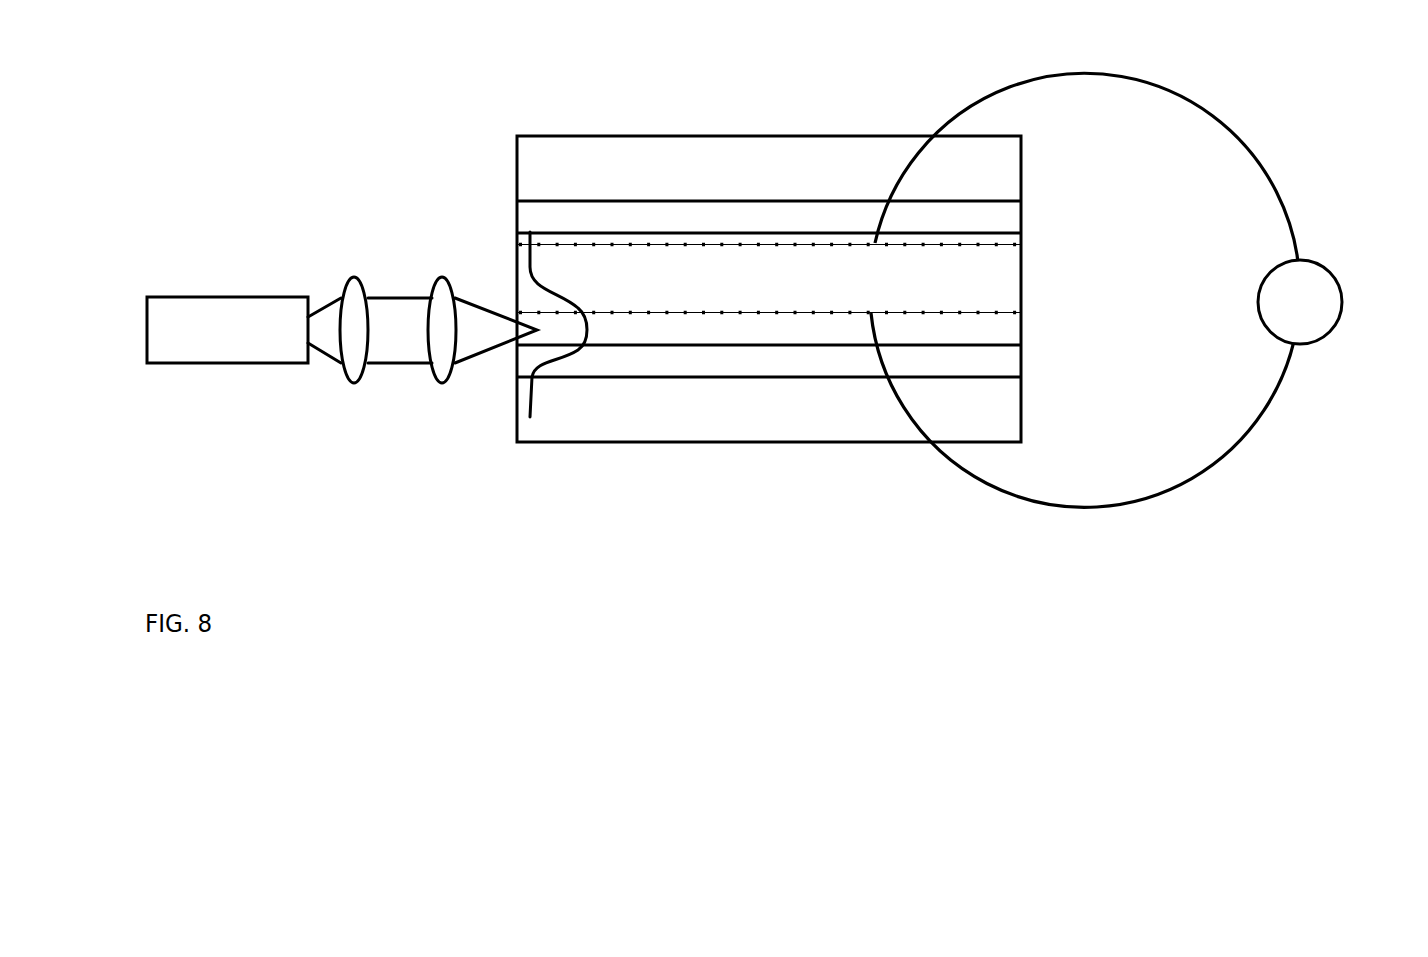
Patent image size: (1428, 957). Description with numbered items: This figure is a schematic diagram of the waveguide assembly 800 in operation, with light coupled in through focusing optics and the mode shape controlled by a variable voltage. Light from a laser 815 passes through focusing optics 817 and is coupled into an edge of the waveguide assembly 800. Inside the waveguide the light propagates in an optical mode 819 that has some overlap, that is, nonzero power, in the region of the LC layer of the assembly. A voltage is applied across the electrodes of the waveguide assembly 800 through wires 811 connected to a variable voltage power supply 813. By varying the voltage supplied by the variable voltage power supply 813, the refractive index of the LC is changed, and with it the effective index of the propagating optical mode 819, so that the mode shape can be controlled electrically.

The waveguide assembly 800 is at (753, 122).
The wires 811 is at (1223, 122).
The variable voltage power supply 813 is at (1338, 277).
The laser 815 is at (237, 295).
The focusing optics 817 is at (434, 402).
The optical mode 819 is at (527, 260).